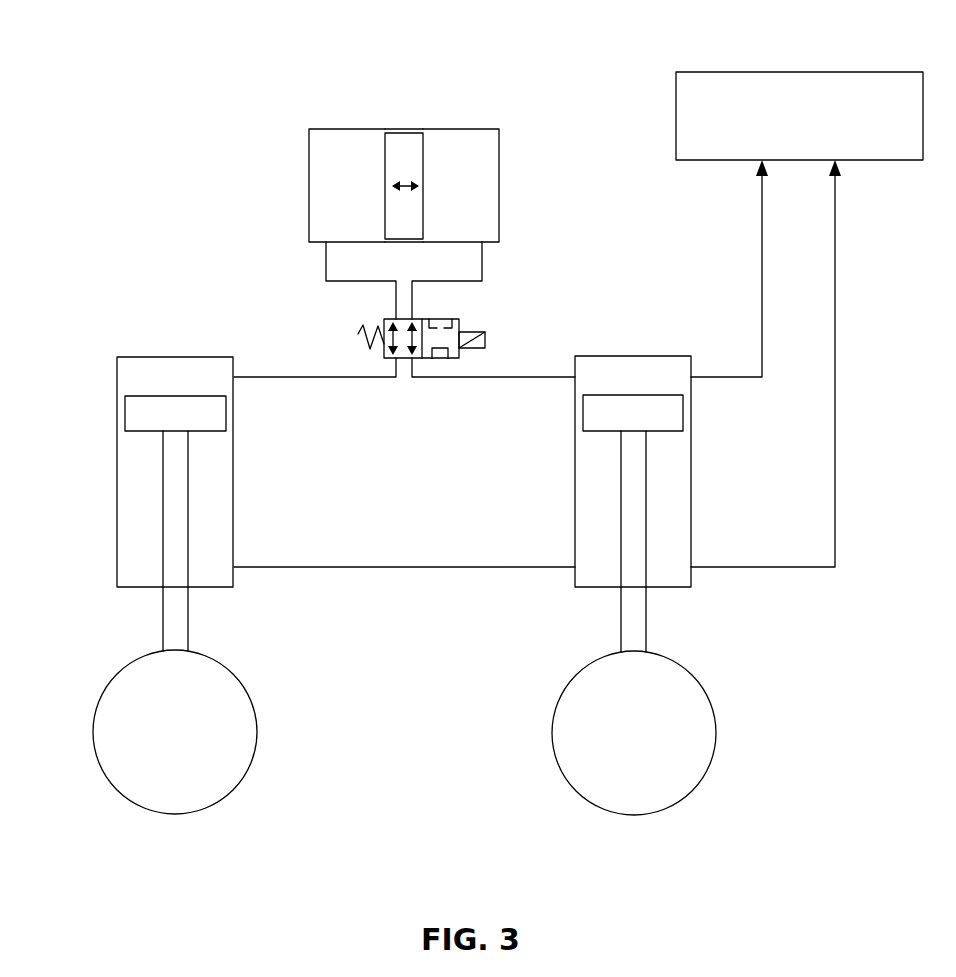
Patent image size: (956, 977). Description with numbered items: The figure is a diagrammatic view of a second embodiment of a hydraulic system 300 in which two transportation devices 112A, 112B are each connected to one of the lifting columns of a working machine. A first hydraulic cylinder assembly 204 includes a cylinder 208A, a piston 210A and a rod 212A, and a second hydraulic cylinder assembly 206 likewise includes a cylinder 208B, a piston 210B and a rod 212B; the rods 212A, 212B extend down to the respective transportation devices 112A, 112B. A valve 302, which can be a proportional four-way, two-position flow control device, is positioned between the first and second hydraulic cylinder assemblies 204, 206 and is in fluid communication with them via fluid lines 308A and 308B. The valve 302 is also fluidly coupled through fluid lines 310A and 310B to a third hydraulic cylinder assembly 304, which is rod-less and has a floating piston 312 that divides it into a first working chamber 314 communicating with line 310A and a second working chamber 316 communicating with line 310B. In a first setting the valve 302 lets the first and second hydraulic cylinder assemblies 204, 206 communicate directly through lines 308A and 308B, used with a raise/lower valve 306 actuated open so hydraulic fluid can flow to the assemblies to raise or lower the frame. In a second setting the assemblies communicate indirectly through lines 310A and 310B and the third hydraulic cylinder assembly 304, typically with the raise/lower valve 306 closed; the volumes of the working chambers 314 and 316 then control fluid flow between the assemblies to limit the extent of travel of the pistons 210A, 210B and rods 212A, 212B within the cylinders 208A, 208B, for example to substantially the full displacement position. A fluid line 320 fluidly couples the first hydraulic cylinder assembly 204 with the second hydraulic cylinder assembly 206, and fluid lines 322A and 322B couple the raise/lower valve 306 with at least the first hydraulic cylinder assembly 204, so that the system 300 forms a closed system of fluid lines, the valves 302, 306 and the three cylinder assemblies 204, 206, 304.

The hydraulic system 300 is at (246, 47).
The third hydraulic cylinder assembly 304 is at (413, 158).
The floating piston 312 is at (423, 157).
The second working chamber 316 is at (323, 178).
The first working chamber 314 is at (478, 178).
The fluid line 310B is at (326, 260).
The fluid line 310A is at (482, 260).
The valve 302 is at (360, 333).
The fluid line 308B is at (328, 378).
The fluid line 308A is at (480, 378).
The second hydraulic cylinder assembly 206 is at (171, 484).
The first hydraulic cylinder assembly 204 is at (633, 486).
The cylinder 208B is at (117, 472).
The cylinder 208A is at (575, 487).
The piston 210B is at (213, 417).
The piston 210A is at (673, 413).
The rod 212B is at (170, 615).
The rod 212A is at (640, 615).
The transportation device 112B is at (258, 732).
The transportation device 112A is at (552, 732).
The fluid line 320 is at (405, 567).
The fluid line 322A is at (762, 268).
The fluid line 322B is at (837, 358).
The raise/lower valve 306 is at (857, 72).